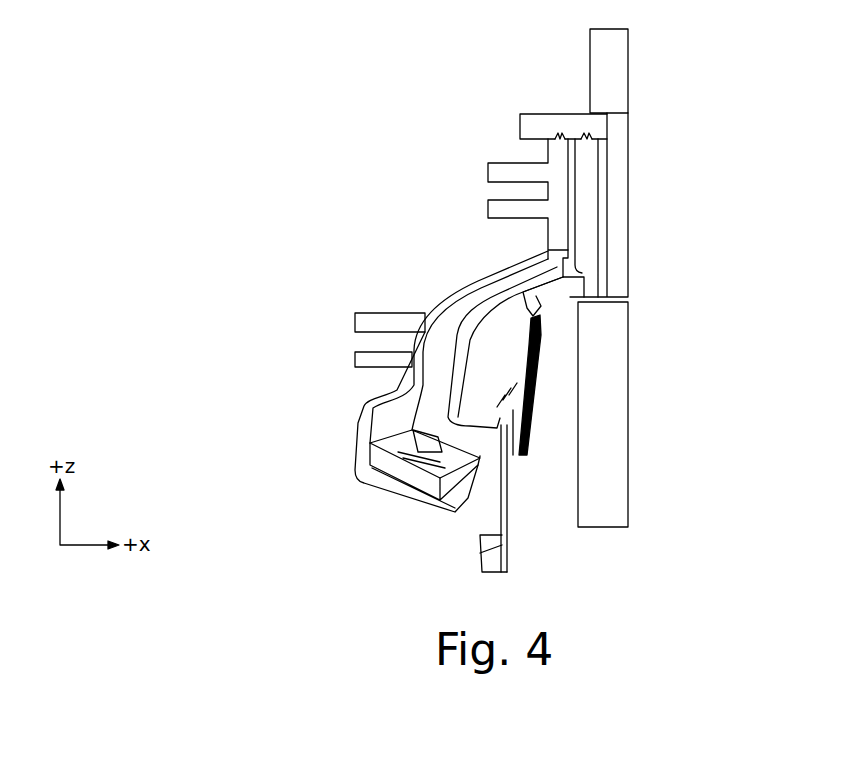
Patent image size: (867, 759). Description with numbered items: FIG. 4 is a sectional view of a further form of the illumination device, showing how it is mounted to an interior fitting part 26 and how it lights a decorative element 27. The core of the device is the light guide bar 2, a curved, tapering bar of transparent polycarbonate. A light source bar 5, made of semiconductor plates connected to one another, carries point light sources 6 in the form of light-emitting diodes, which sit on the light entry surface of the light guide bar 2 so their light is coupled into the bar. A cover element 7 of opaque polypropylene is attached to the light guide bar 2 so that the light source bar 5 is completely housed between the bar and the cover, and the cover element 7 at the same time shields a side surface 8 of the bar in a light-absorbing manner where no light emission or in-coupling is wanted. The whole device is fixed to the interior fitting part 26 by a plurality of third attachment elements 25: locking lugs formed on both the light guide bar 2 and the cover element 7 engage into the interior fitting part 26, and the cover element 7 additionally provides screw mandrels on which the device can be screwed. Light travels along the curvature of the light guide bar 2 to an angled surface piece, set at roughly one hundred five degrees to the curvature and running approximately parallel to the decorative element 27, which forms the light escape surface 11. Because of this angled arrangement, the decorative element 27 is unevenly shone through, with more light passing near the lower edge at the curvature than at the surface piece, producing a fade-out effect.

The light guide bar 2 is at (395, 380).
The light source bar 5 is at (383, 460).
The point light sources 6 is at (427, 447).
The cover element 7 is at (457, 287).
The side surface 8 is at (497, 277).
The light escape surface 11 is at (598, 204).
The third attachment elements 25 is at (587, 134).
The interior fitting part 26 is at (629, 413).
The decorative element 27 is at (643, 163).